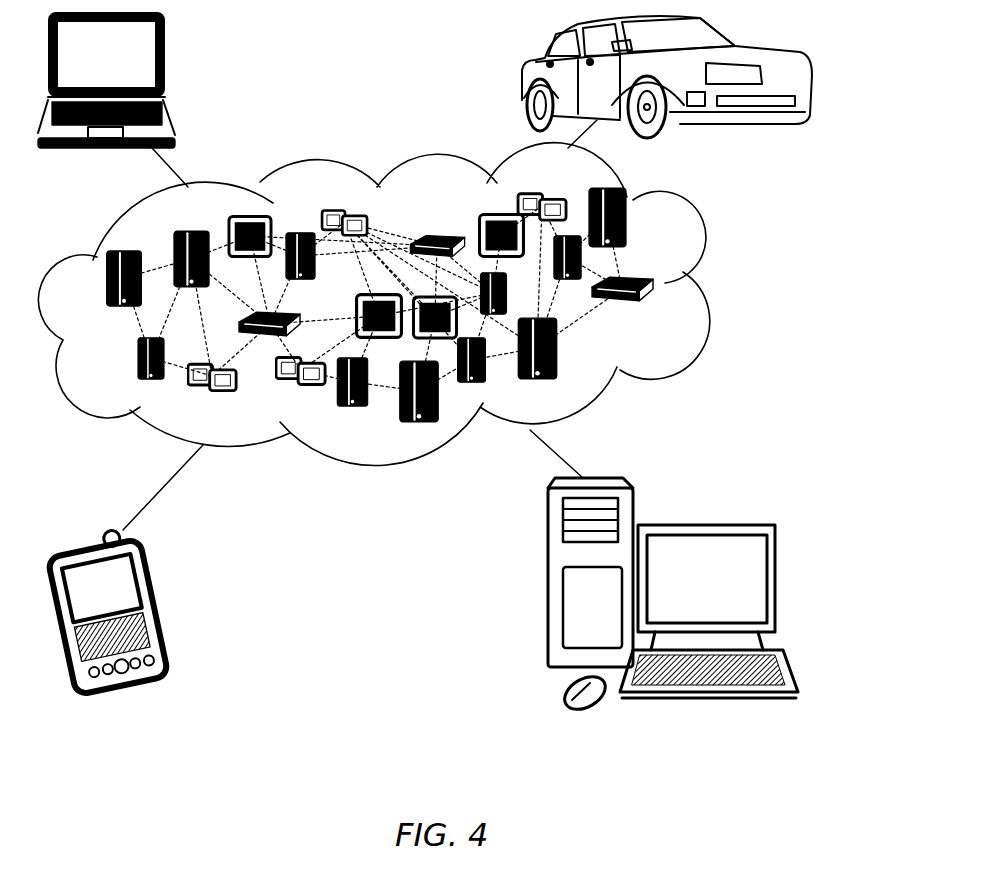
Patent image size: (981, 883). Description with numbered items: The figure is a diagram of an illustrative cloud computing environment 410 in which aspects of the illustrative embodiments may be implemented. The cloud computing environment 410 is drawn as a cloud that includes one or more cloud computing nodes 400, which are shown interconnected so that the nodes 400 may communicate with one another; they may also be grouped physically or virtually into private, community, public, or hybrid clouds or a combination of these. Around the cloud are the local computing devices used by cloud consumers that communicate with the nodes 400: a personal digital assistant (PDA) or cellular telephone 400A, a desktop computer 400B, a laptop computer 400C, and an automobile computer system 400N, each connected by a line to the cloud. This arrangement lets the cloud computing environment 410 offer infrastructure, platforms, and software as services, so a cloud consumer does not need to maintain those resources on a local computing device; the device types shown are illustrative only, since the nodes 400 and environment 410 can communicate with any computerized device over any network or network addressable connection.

The cloud computing nodes 400 is at (658, 312).
The cloud computing environment 410 is at (702, 288).
The personal digital assistant (PDA) or cellular telephone 400A is at (153, 607).
The desktop computer 400B is at (705, 522).
The laptop computer 400C is at (163, 62).
The automobile computer system 400N is at (520, 78).